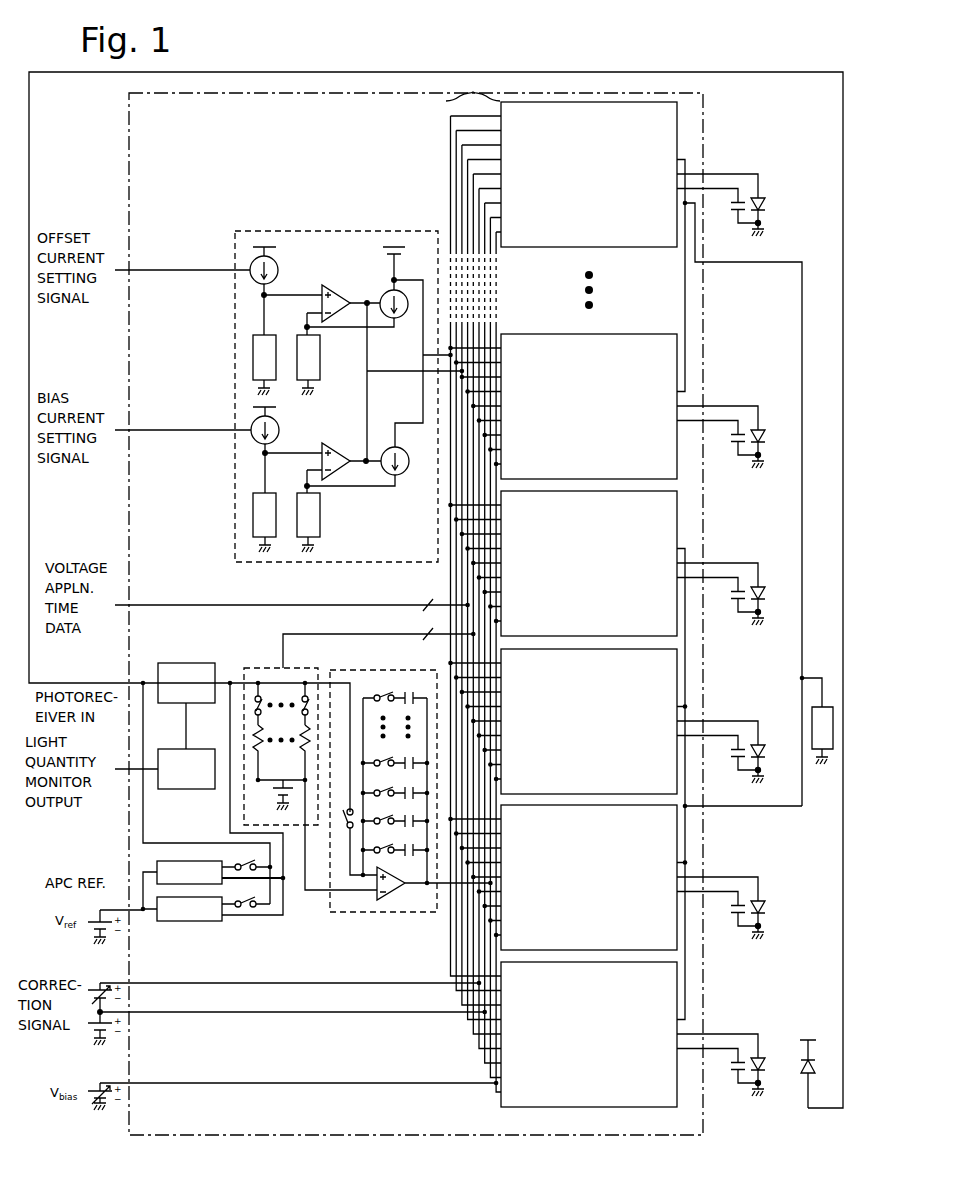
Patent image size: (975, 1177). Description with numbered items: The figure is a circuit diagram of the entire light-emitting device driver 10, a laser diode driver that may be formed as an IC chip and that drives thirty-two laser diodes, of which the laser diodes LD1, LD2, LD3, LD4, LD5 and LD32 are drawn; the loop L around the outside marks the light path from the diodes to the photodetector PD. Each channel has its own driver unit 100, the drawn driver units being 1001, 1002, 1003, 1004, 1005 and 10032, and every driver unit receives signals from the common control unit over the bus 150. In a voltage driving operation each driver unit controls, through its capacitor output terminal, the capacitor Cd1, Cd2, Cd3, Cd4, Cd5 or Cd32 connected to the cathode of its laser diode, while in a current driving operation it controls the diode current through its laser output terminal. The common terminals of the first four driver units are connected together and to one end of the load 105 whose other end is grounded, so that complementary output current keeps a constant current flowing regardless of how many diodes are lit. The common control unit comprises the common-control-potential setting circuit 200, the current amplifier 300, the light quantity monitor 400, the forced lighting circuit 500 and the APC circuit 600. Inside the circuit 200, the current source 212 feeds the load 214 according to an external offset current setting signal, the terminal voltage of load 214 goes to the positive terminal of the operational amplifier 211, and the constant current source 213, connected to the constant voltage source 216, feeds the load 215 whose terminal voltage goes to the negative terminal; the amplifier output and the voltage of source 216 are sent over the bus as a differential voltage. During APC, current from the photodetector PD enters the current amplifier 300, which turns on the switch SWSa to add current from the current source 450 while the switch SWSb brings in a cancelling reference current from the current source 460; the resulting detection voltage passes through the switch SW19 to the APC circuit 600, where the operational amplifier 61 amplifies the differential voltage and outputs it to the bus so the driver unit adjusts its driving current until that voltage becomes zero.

The laser light / optical path loop L is at (79, 73).
The light-emitting device driver 10 is at (575, 93).
The bus 150 is at (476, 90).
The common-control-potential setting circuit 200 is at (358, 231).
The operational amplifier 211 is at (352, 283).
The current source 212 is at (278, 266).
The constant current source 213 is at (403, 316).
The load 214 is at (272, 333).
The load 215 is at (320, 362).
The constant voltage source 216 is at (392, 259).
The current amplifier 300 is at (188, 662).
The light quantity monitor 400 is at (160, 748).
The current source 450 is at (185, 860).
The current source 460 is at (185, 922).
The forced lighting circuit 500 is at (256, 668).
The APC circuit 600 is at (357, 913).
The operational amplifier 61 is at (395, 897).
The load 105 is at (822, 705).
The driver unit 100 is at (629, 604).
The driver unit 10032 is at (677, 132).
The driver unit 1005 is at (677, 364).
The driver unit 1004 is at (677, 521).
The driver unit 1003 is at (677, 679).
The driver unit 1002 is at (677, 835).
The driver unit 1001 is at (677, 992).
The laser diode LD32 is at (763, 201).
The laser diode LD5 is at (763, 433).
The laser diode LD4 is at (763, 590).
The laser diode LD3 is at (763, 748).
The laser diode LD2 is at (763, 904).
The laser diode LD1 is at (763, 1061).
The capacitor Cd32 is at (730, 216).
The capacitor Cd5 is at (730, 448).
The capacitor Cd4 is at (730, 605).
The capacitor Cd3 is at (730, 763).
The capacitor Cd2 is at (730, 919).
The capacitor Cd1 is at (730, 1076).
The photodetector PD is at (814, 1068).
The switch SW19 is at (347, 830).
The switch SWSa is at (246, 859).
The switch SWSb is at (246, 896).